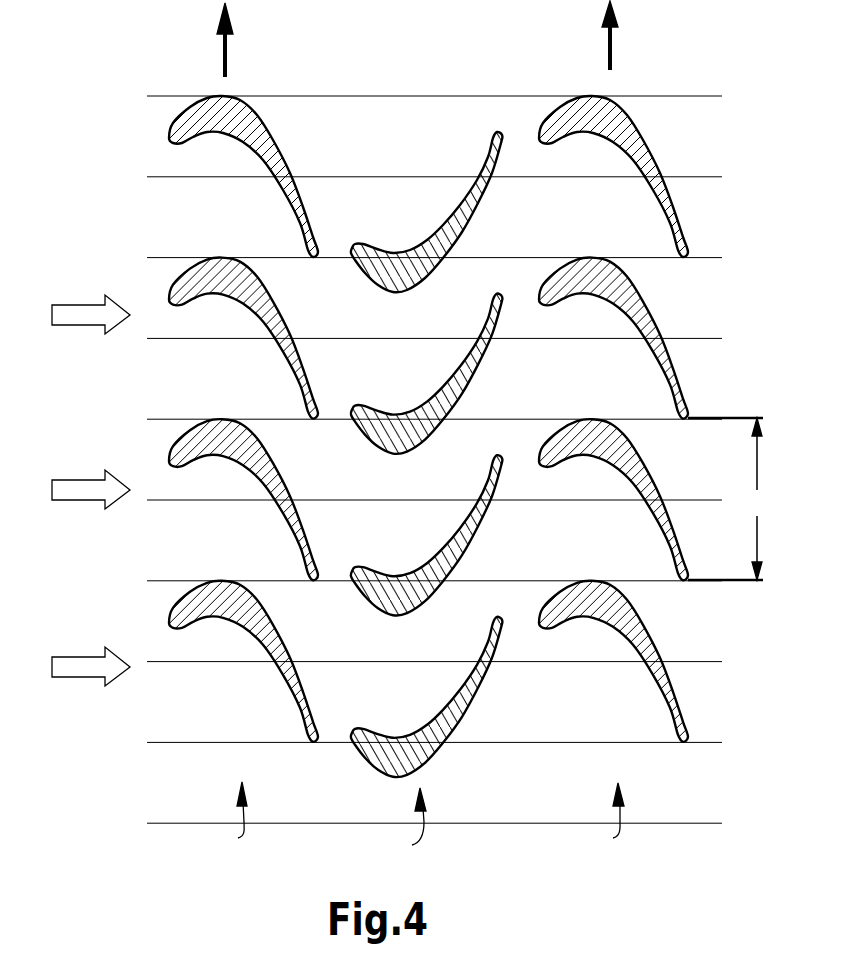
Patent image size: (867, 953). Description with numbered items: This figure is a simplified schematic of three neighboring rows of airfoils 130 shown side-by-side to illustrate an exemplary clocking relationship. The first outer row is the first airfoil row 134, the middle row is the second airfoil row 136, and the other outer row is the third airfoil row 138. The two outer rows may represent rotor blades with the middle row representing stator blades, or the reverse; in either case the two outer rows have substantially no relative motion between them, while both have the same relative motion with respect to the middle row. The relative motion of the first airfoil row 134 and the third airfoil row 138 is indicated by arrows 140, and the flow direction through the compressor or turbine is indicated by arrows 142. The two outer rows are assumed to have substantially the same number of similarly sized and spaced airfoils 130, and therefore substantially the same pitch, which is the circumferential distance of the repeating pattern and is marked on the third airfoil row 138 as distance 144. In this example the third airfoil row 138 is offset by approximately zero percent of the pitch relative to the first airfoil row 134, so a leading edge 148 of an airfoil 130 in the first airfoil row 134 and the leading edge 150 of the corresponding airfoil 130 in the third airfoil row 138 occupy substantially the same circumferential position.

The airfoil 130 is at (438, 436).
The first airfoil row 134 is at (220, 820).
The second airfoil row 136 is at (399, 825).
The third airfoil row 138 is at (597, 820).
The arrows 140 is at (228, 50).
The arrows 142 is at (80, 305).
The distance 144 is at (733, 499).
The leading edge 148 is at (172, 300).
The leading edge 150 is at (537, 302).